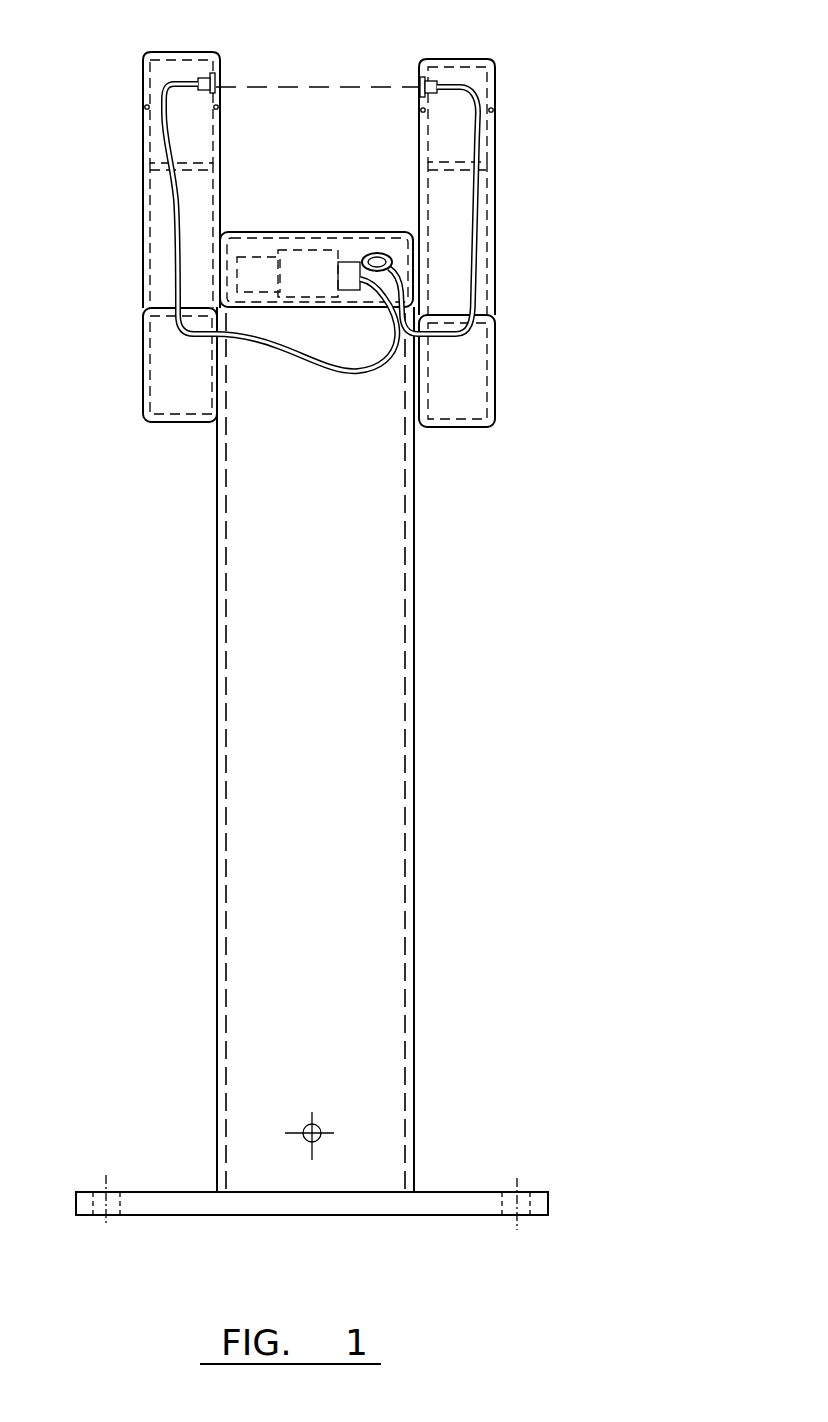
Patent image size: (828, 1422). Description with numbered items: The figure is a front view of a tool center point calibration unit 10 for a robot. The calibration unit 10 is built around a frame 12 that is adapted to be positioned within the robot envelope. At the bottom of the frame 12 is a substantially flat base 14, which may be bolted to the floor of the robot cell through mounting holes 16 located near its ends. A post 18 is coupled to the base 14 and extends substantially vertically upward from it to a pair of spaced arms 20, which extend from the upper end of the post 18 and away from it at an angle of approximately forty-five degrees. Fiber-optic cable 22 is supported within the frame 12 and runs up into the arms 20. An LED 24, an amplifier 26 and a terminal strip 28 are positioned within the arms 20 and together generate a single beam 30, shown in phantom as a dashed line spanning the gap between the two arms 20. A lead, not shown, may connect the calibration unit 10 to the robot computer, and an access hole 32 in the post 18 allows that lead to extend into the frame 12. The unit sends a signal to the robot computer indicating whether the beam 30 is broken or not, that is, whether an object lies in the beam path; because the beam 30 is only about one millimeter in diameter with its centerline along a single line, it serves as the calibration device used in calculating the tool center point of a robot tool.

The tool center point calibration unit 10 is at (118, 872).
The frame 12 is at (427, 750).
The base 14 is at (443, 1193).
The mounting holes 16 is at (120, 1192).
The post 18 is at (334, 782).
The arms 20 is at (143, 281).
The fiber-optic cable 22 is at (460, 82).
The LED 24 is at (372, 253).
The amplifier 26 is at (345, 262).
The terminal strip 28 is at (260, 257).
The single beam 30 is at (320, 87).
The access hole 32 is at (311, 1124).